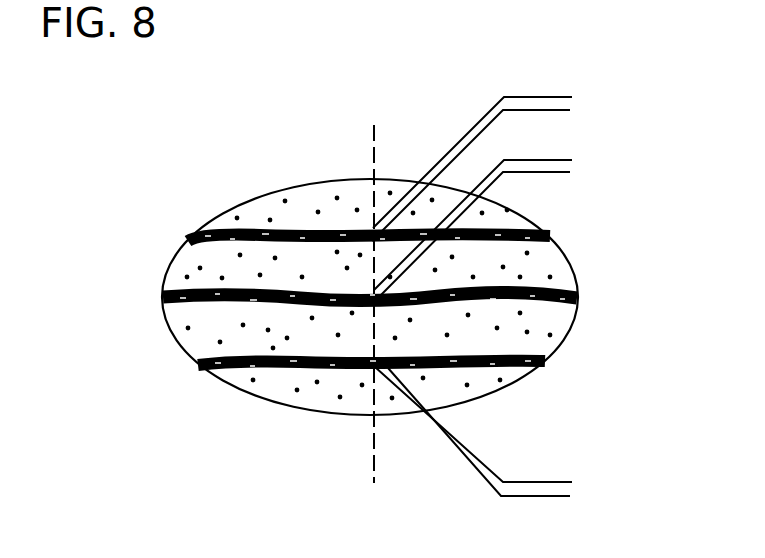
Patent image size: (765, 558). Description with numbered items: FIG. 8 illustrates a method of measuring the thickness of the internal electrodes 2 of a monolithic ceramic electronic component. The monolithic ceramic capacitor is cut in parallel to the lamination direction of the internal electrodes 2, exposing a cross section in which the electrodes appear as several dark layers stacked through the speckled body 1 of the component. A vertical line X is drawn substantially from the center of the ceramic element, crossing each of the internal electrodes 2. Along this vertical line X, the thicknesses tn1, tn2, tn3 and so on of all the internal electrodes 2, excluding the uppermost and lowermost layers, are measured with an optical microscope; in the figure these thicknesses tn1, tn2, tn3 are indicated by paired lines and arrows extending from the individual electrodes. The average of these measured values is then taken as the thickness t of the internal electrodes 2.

The base material layers 1 is at (540, 263).
The internal electrodes 2 is at (297, 226).
The vertical line X is at (375, 147).
The thickness tn1 is at (555, 73).
The thickness tn2 is at (555, 137).
The thickness tn3 is at (555, 455).